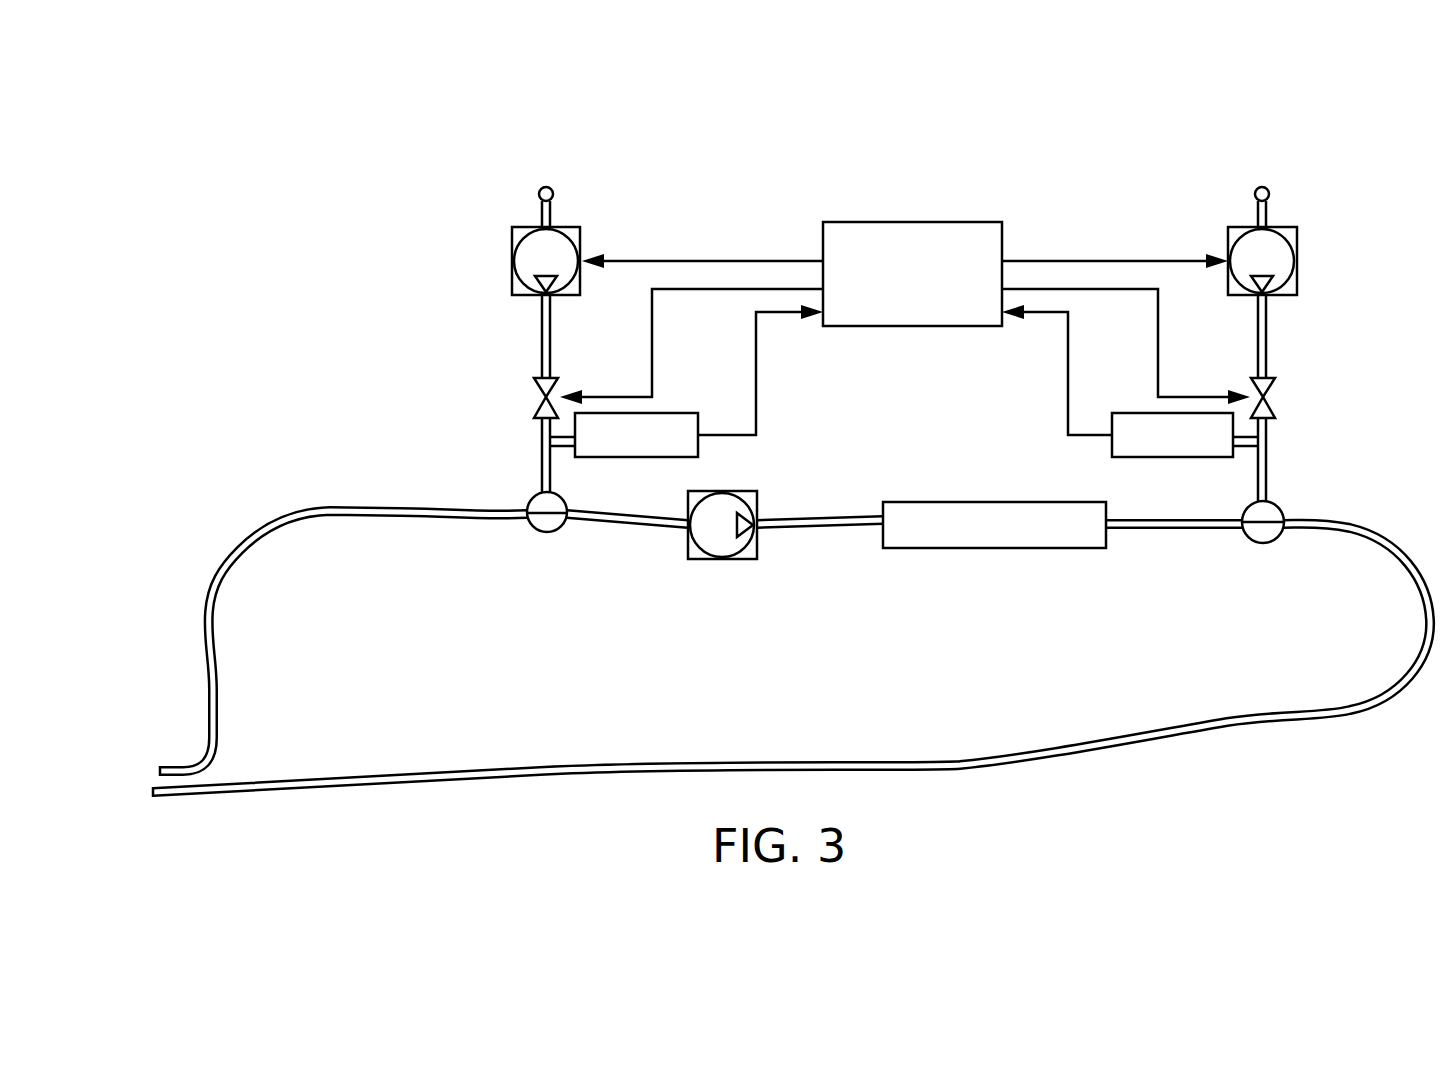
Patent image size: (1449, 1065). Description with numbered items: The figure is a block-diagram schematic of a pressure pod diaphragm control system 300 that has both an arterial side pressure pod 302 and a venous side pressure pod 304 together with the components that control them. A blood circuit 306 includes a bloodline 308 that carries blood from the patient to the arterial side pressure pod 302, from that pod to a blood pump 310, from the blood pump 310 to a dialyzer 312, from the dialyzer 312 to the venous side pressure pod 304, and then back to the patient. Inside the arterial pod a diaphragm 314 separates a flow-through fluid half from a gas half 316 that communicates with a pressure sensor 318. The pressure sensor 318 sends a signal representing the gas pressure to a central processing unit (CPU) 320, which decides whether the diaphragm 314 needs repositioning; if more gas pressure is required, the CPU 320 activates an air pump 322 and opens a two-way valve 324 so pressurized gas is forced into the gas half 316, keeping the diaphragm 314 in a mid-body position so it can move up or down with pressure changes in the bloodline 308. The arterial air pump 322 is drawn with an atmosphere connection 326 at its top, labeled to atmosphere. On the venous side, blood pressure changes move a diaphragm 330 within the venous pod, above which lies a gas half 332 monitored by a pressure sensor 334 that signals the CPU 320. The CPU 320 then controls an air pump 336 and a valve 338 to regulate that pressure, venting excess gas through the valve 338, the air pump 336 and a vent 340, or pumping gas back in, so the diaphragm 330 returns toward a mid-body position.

The system 300 is at (1098, 131).
The arterial side pressure pod 302 is at (548, 533).
The venous side pressure pod 304 is at (1263, 543).
The blood circuit 306 is at (791, 686).
The bloodline 308 is at (218, 622).
The blood pump 310 is at (724, 560).
The dialyzer 312 is at (1000, 550).
The diaphragm 314 is at (528, 499).
The gas half 316 is at (553, 505).
The pressure sensor 318 is at (676, 412).
The central processing unit (CPU) 320 is at (907, 326).
The air pump 322 is at (512, 258).
The valve 324 is at (541, 392).
The arterial atmosphere port 326 is at (553, 196).
The diaphragm 330 is at (1243, 513).
The gas half 332 is at (1270, 510).
The pressure sensor 334 is at (1112, 440).
The air pump 336 is at (1297, 258).
The valve 338 is at (1272, 398).
The vent 340 is at (1255, 194).